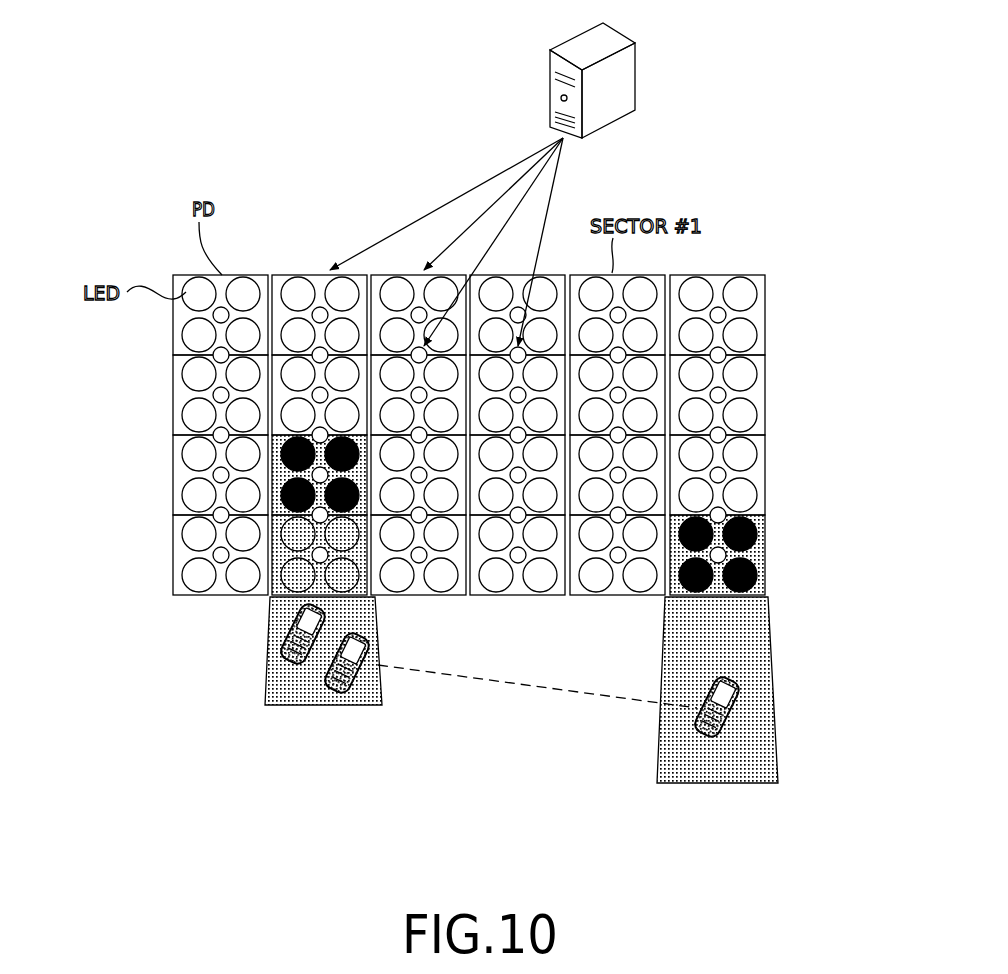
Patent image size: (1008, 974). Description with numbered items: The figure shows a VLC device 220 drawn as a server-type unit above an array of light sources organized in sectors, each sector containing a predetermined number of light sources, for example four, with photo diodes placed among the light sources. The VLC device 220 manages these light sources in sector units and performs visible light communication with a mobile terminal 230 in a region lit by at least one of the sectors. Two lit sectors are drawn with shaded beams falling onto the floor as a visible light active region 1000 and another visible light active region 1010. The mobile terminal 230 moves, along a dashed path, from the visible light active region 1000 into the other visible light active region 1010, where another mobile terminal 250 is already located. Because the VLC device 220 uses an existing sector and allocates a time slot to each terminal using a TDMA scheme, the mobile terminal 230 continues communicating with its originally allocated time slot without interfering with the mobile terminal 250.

The VLC device 220 is at (618, 32).
The mobile terminal 230 is at (331, 705).
The mobile terminal 250 is at (280, 648).
The visible light active region 1000 is at (775, 666).
The visible light active region 1010 is at (376, 639).